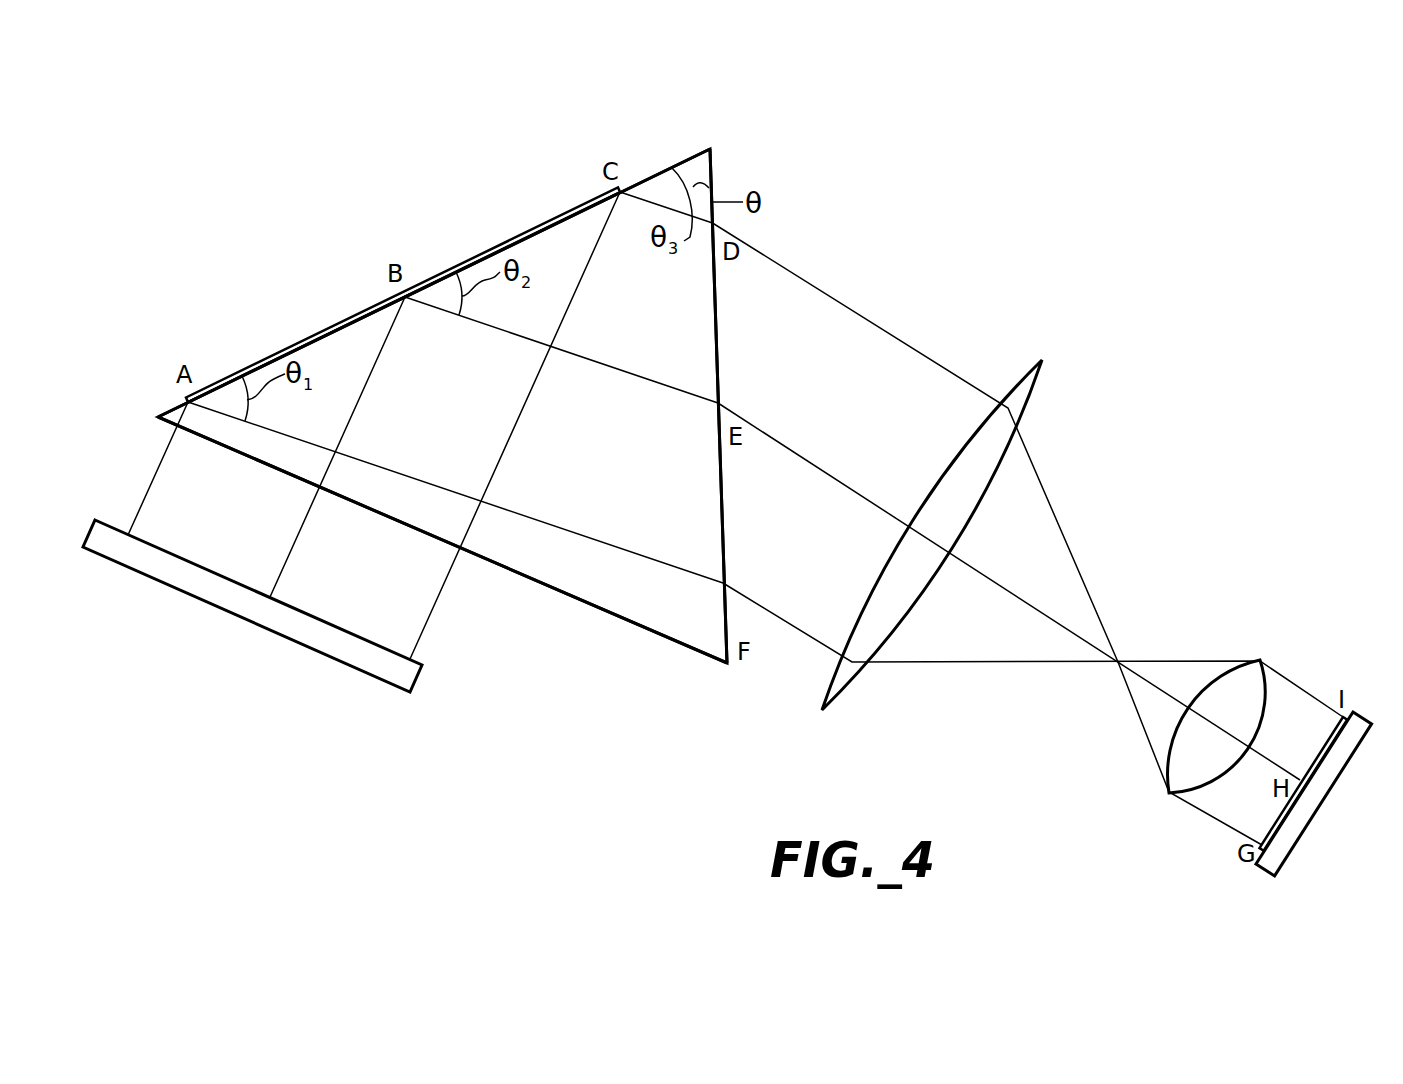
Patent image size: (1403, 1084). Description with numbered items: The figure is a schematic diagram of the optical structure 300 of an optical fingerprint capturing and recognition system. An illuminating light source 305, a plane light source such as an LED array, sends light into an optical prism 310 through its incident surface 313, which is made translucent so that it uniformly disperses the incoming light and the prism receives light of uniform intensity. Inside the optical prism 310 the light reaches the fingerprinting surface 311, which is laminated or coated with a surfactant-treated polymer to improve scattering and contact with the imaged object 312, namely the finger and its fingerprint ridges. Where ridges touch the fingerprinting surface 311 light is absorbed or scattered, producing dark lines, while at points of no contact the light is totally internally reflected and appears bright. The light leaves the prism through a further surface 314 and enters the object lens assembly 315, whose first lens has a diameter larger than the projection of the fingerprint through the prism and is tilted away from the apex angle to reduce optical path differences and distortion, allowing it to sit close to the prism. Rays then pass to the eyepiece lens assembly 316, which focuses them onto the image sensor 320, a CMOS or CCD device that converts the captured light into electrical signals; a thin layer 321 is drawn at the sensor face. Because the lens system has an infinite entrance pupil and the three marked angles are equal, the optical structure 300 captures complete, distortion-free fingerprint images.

The optical structure 300 is at (885, 205).
The illuminating light source 305 is at (343, 667).
The optical prism 310 is at (655, 620).
The fingerprinting surface 311 is at (680, 195).
The imaged object 312 is at (308, 330).
The incident surface 313 is at (537, 585).
The third prism surface 314 is at (717, 293).
The object lens assembly 315 is at (1018, 372).
The eyepiece lens assembly 316 is at (1252, 658).
The image sensor 320 is at (1372, 708).
The detector filter 321 is at (1307, 793).